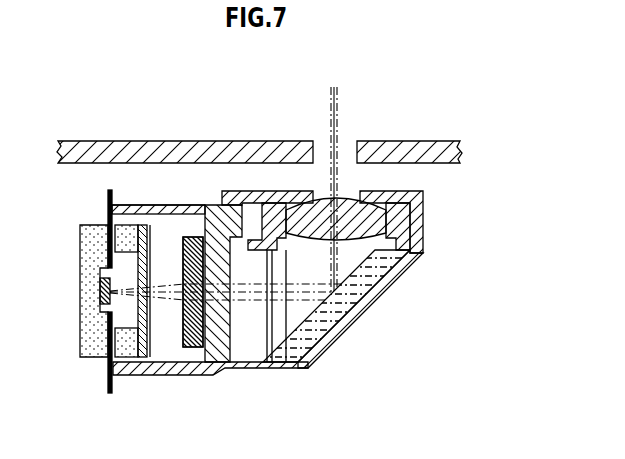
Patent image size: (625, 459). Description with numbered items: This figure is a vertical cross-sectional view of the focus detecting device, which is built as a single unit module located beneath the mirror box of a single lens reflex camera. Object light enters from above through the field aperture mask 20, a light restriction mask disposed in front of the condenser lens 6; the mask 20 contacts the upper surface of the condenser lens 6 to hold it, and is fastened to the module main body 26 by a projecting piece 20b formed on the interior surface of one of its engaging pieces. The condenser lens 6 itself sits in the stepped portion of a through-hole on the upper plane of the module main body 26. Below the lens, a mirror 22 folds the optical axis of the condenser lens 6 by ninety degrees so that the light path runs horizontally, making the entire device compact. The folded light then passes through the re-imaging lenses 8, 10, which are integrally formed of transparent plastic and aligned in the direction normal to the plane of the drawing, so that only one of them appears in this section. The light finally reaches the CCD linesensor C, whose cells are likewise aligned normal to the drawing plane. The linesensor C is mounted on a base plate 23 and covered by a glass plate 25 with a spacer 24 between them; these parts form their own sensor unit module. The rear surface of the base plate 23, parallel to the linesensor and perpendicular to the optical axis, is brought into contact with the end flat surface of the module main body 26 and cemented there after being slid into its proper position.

The field aperture mask 20 is at (322, 192).
The projecting piece 20b is at (407, 261).
The mirror 22 is at (338, 326).
The condenser lens 6 is at (416, 216).
The module main body 26 is at (173, 205).
The base plate 23 is at (80, 245).
The CCD linesensor C is at (99, 292).
The spacer 24 is at (130, 360).
The glass plate 25 is at (150, 352).
The re-imaging lens 8 is at (172, 295).
The re-imaging lens 10 is at (193, 292).